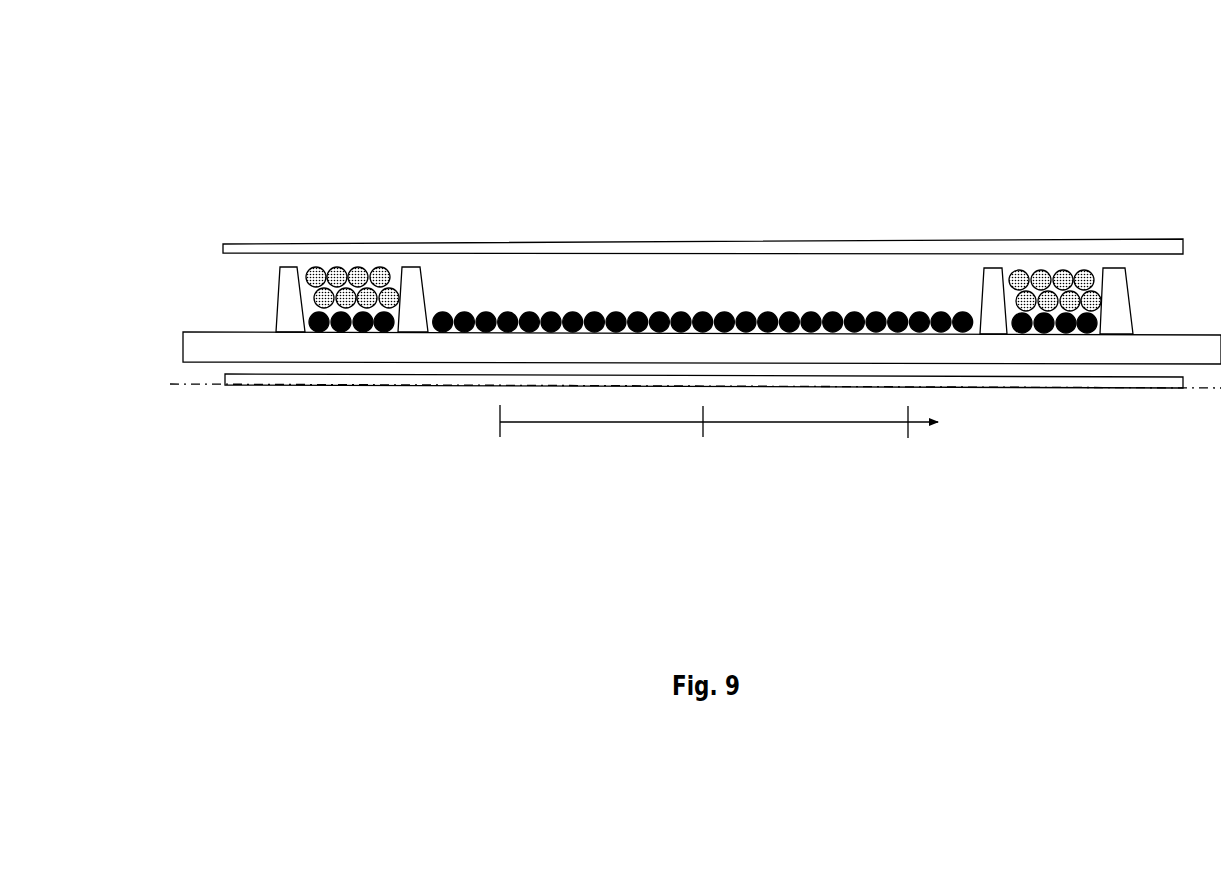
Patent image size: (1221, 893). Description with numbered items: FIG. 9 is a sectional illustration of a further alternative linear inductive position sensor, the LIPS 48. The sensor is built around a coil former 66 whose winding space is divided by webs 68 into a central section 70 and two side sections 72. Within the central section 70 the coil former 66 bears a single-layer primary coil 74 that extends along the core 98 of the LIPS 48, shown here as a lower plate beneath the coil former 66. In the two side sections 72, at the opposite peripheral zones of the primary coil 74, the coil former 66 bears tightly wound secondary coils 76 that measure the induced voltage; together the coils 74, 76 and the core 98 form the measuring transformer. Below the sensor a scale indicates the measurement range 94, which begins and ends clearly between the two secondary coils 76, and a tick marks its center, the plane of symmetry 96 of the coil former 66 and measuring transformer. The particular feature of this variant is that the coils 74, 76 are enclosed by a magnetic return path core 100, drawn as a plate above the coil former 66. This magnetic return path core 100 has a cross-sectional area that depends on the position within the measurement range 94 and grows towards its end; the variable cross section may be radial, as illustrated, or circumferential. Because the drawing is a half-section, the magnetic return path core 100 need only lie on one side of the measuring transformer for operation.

The LIPS 48 is at (233, 91).
The coil former 66 is at (187, 345).
The webs 68 is at (289, 273).
The central section 70 is at (554, 119).
The side sections 72 is at (338, 134).
The primary coil 74 is at (659, 312).
The secondary coils 76 is at (358, 267).
The measurement range 94 is at (627, 422).
The plane of symmetry 96 is at (703, 437).
The core 98 is at (345, 376).
The magnetic return path core 100 is at (872, 242).